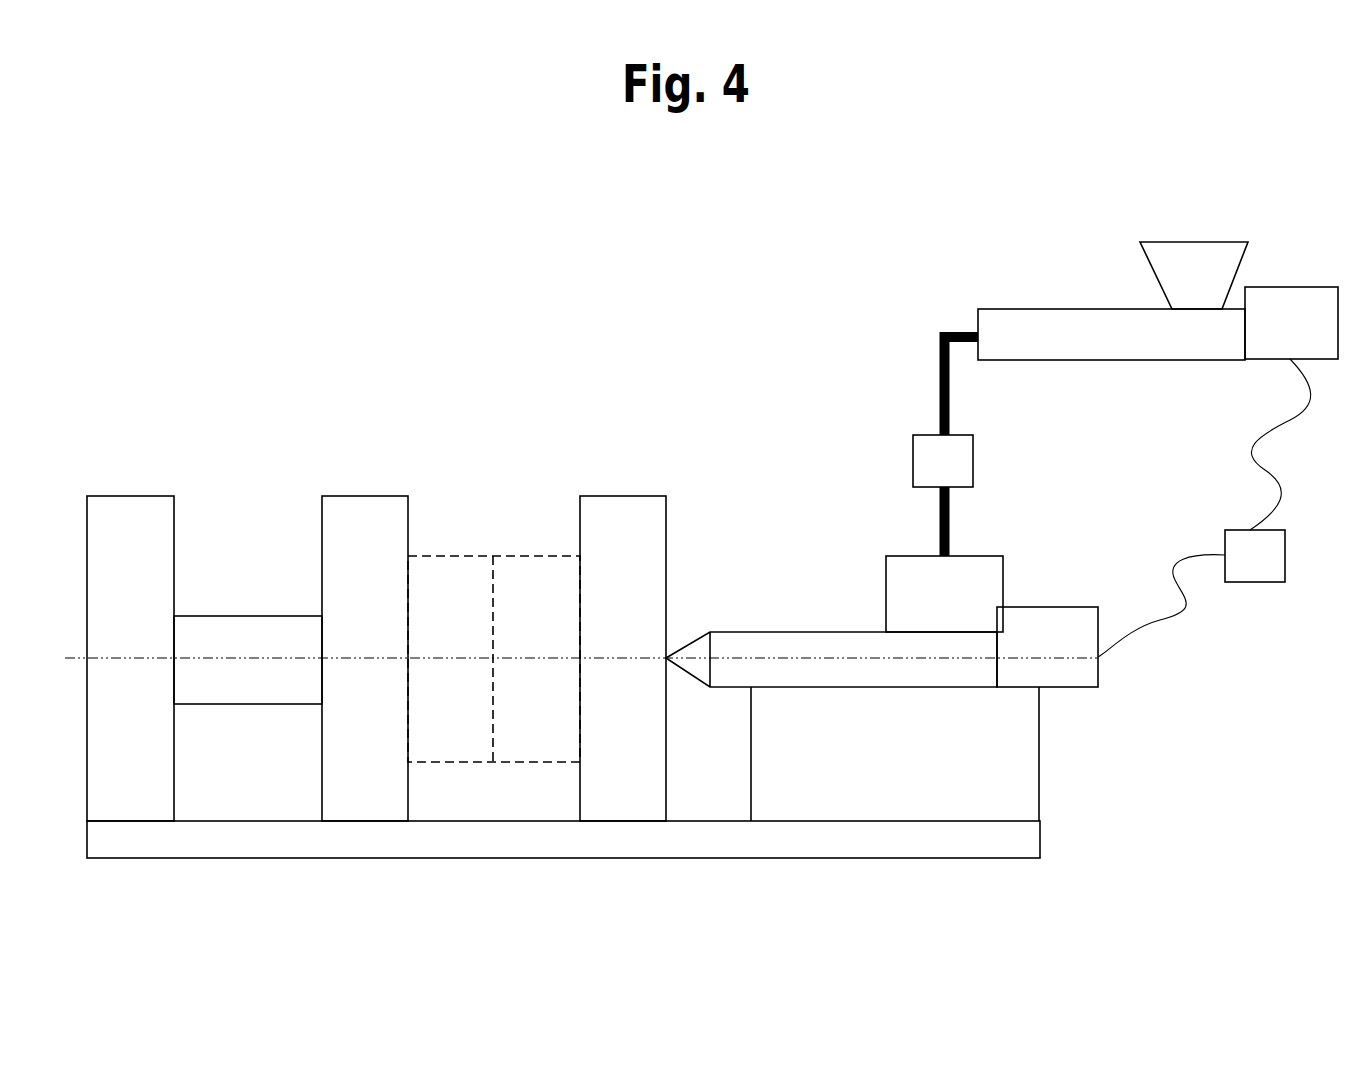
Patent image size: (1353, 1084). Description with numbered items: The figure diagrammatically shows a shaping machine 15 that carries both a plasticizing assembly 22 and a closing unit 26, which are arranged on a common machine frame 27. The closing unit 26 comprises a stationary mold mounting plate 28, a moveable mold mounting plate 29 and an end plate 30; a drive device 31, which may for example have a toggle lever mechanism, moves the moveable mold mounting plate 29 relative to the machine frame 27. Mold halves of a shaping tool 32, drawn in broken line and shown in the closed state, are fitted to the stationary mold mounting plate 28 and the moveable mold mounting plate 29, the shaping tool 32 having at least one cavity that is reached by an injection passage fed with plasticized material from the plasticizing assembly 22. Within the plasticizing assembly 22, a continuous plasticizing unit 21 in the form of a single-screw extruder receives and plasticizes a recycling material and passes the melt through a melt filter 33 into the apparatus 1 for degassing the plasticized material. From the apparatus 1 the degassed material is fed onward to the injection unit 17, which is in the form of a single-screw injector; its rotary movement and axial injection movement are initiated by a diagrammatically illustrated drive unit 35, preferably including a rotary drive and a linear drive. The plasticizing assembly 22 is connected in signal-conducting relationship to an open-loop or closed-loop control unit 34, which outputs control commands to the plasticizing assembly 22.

The shaping machine 15 is at (225, 200).
The closing unit 26 is at (490, 320).
The plasticizing assembly 22 is at (732, 320).
The machine frame 27 is at (537, 835).
The stationary mold mounting plate 28 is at (626, 523).
The moveable mold mounting plate 29 is at (356, 524).
The end plate 30 is at (124, 518).
The drive device 31 is at (202, 642).
The shaping tool 32 is at (418, 470).
The injection unit 17 is at (797, 647).
The apparatus for degassing 1 is at (898, 577).
The drive unit 35 is at (1048, 635).
The melt filter 33 is at (928, 460).
The continuous plasticizing unit 21 is at (1073, 320).
The open-loop or closed-loop control unit 34 is at (1260, 568).